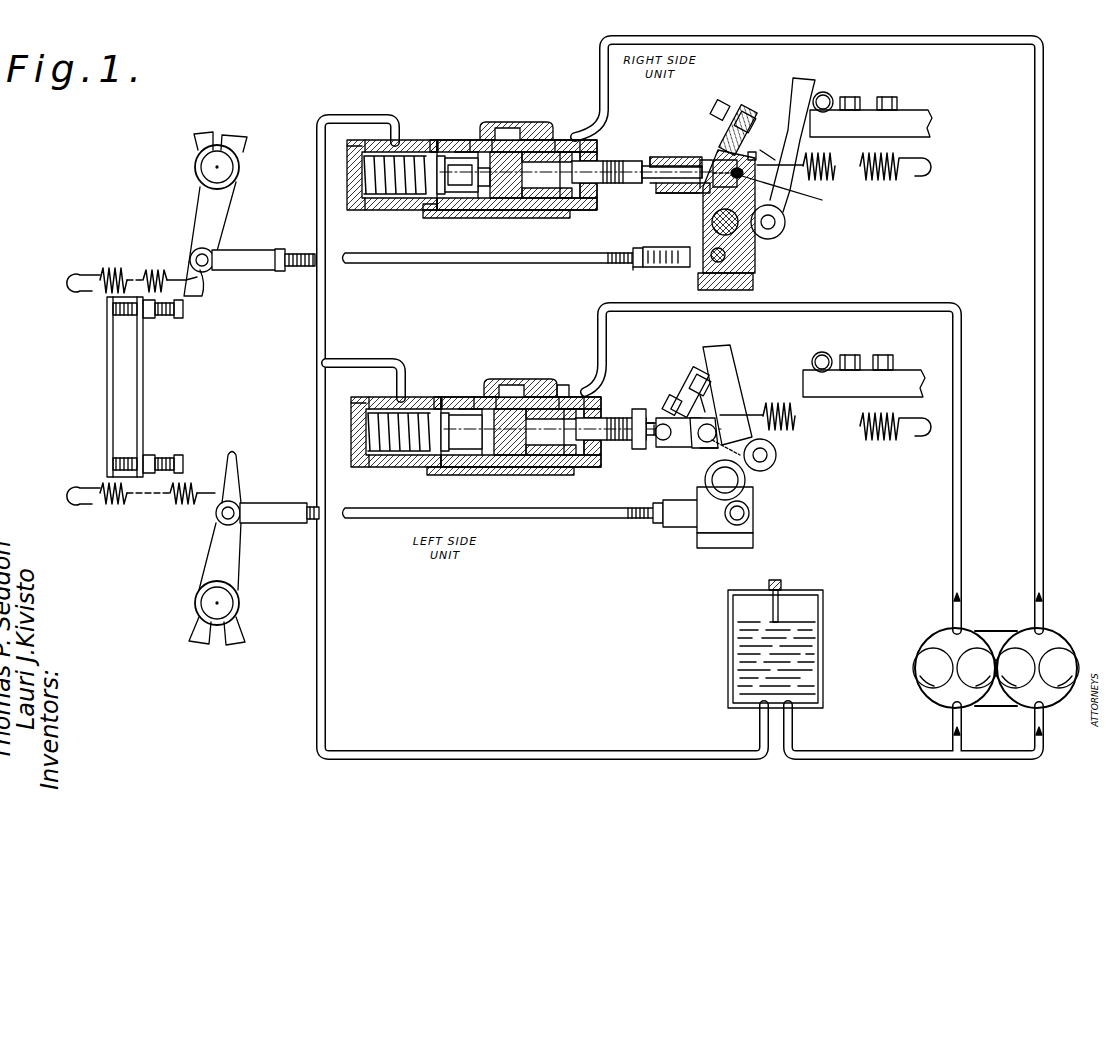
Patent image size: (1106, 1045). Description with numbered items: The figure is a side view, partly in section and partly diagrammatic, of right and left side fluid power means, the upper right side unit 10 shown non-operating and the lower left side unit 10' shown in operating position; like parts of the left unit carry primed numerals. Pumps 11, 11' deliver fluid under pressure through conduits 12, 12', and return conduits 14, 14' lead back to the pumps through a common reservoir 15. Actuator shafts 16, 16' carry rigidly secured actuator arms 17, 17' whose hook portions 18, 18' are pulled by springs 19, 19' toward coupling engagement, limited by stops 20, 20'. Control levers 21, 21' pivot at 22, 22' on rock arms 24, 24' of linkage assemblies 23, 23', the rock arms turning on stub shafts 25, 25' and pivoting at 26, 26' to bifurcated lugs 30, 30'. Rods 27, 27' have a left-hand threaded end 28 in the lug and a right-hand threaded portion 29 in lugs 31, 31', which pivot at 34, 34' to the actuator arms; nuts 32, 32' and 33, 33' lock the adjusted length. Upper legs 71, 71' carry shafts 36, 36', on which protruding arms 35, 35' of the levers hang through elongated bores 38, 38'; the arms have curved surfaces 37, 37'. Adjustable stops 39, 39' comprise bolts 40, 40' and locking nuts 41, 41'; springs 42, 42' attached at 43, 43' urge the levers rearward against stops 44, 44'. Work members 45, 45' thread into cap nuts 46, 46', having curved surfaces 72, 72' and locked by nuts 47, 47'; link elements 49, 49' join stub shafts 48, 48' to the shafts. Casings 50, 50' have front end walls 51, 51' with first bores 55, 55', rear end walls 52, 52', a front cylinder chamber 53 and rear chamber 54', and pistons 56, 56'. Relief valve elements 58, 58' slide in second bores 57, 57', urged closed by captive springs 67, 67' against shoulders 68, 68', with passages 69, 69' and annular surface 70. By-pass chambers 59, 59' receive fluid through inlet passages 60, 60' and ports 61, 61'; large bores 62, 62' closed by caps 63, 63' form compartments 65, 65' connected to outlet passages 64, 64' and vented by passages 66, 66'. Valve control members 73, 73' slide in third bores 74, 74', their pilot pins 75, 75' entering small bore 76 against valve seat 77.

The fluid power unit 10 is at (517, 130).
The second fluid power unit 10' is at (521, 380).
The pump 11 is at (1027, 649).
The pump 11' is at (947, 654).
The conduit 12 is at (825, 335).
The conduit 12' is at (792, 468).
The return conduit 14 is at (542, 420).
The return conduit 14' is at (363, 357).
The fluid reservoir 15 is at (812, 644).
The rotative shaft 16 is at (238, 160).
The rotative shaft 16' is at (238, 613).
The actuator arm 17 is at (231, 221).
The actuator arm 17' is at (237, 556).
The hook portion 18 is at (215, 283).
The hook portion 18' is at (249, 477).
The spring 19 is at (132, 259).
The spring 19' is at (141, 508).
The stop means 20 is at (147, 387).
The stop means 20' is at (156, 447).
The manually operable control lever 21 is at (797, 134).
The manually operable control lever 21' is at (736, 387).
The pivot mount 22 is at (787, 222).
The pivot mount 22' is at (779, 449).
The linkage assembly 23 is at (684, 186).
The linkage assembly 23' is at (758, 473).
The rock arm 24 is at (710, 211).
The rock arm 24' is at (709, 501).
The stub shaft 25 is at (703, 226).
The stub shaft 25' is at (742, 483).
The pivotal connection 26 is at (743, 269).
The pivotal connection 26' is at (750, 524).
The rod 27 is at (502, 236).
The rod 27' is at (498, 528).
The left-hand threaded end portion 28 is at (612, 253).
The right-hand threaded portion 29 is at (296, 252).
The bifurcated lug 30 is at (659, 240).
The bifurcated lug 30' is at (689, 530).
The bifurcated lug 31 is at (244, 243).
The bifurcated lug 31' is at (273, 496).
The left-hand threaded locking nut 32 is at (625, 277).
The left-hand threaded locking nut 32' is at (633, 527).
The right-hand threaded nut 33 is at (280, 276).
The right-hand threaded nut 33' is at (300, 533).
The pivotal connection 34 is at (183, 246).
The pivotal connection 34' is at (202, 527).
The protruding arm 35 is at (718, 153).
The protruding arm 35' is at (674, 456).
The shaft 36 is at (771, 188).
The shaft 36' is at (734, 399).
The curved surface 37 is at (691, 144).
The curved surface 37' is at (645, 450).
The elongated bore 38 is at (801, 194).
The elongated bore 38' is at (724, 447).
The adjustable stop means 39 is at (749, 112).
The adjustable stop means 39' is at (673, 371).
The bolt 40 is at (733, 84).
The bolt 40' is at (653, 377).
The locking nut 41 is at (758, 92).
The locking nut 41' is at (690, 355).
The spring 42 is at (895, 174).
The spring 42' is at (894, 438).
The spring connection 43 is at (812, 154).
The spring connection 43' is at (760, 401).
The stop 44 is at (871, 96).
The stop 44' is at (864, 356).
The work member 45 is at (622, 154).
The work member 45' is at (616, 407).
The adjustable cap nut 46 is at (657, 149).
The adjustable cap nut 46' is at (628, 420).
The lock nut 47 is at (673, 162).
The lock nut 47' is at (618, 450).
The stub shaft 48 is at (674, 134).
The stub shaft 48' is at (656, 402).
The link element 49 is at (662, 198).
The link element 49' is at (625, 459).
The casing 50 is at (510, 155).
The casing 50' is at (514, 411).
The front end wall 51 is at (509, 98).
The front end wall 51' is at (498, 369).
The rear end wall 52 is at (581, 149).
The rear end wall 52' is at (580, 405).
The front cylinder chamber 53 is at (520, 122).
The rear cylinder chamber 54' is at (574, 357).
The first bore 55 is at (492, 110).
The first bore 55' is at (493, 363).
The piston 56 is at (547, 143).
The piston 56' is at (545, 393).
The second bore 57 is at (454, 101).
The second bore 57' is at (459, 367).
The pressure relief valve element 58 is at (464, 149).
The pressure relief valve element 58' is at (444, 380).
The fluid by-pass chamber 59 is at (478, 101).
The fluid by-pass chamber 59' is at (462, 357).
The open inlet passage 60 is at (565, 134).
The open inlet passage 60' is at (566, 377).
The open port 61 is at (573, 116).
The open port 61' is at (577, 371).
The large bore 62 is at (422, 118).
The large bore 62' is at (412, 367).
The cap 63 is at (387, 166).
The cap 63' is at (388, 423).
The fluid outlet passage 64 is at (382, 106).
The fluid outlet passage 64' is at (372, 391).
The fluid compartment 65 is at (393, 194).
The fluid compartment 65' is at (399, 455).
The first fluid passage 66 is at (496, 227).
The first fluid passage 66' is at (500, 484).
The captive spring 67 is at (379, 149).
The captive spring 67' is at (357, 445).
The shoulder portion 68 is at (438, 131).
The shoulder portion 68' is at (405, 405).
The second fluid passage 69 is at (450, 195).
The second fluid passage 69' is at (449, 456).
The annular surface 70 is at (483, 186).
The upper leg 71 is at (779, 137).
The upper leg 71' is at (710, 365).
The curved surface 72 is at (752, 136).
The curved surface 72' is at (760, 445).
The valve control member 73 is at (580, 136).
The valve control member 73' is at (584, 455).
The third bore 74 is at (633, 145).
The third bore 74' is at (605, 458).
The pilot pin 75 is at (506, 143).
The pilot pin 75' is at (491, 455).
The small bore 76 is at (460, 175).
The control valve seat 77 is at (510, 204).